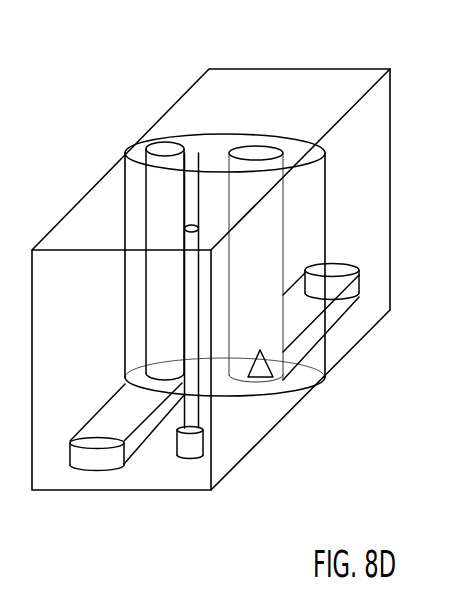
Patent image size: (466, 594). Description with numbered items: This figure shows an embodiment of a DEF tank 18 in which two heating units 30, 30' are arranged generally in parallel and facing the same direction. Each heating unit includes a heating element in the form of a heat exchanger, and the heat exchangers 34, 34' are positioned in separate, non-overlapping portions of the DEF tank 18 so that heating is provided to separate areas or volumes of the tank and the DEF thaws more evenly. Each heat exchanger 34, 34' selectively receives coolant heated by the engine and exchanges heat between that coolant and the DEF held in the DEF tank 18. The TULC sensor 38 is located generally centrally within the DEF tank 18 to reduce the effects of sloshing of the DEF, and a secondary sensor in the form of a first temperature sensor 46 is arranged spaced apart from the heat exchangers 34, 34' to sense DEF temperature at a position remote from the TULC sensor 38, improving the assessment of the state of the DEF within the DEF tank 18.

The DEF tank 18 is at (370, 69).
The heating unit 30 is at (271, 202).
The second heating unit 30' is at (140, 227).
The heat exchanger 34 is at (361, 295).
The second heat exchanger 34' is at (127, 478).
The TULC sensor 38 is at (262, 372).
The first temperature sensor 46 is at (192, 443).